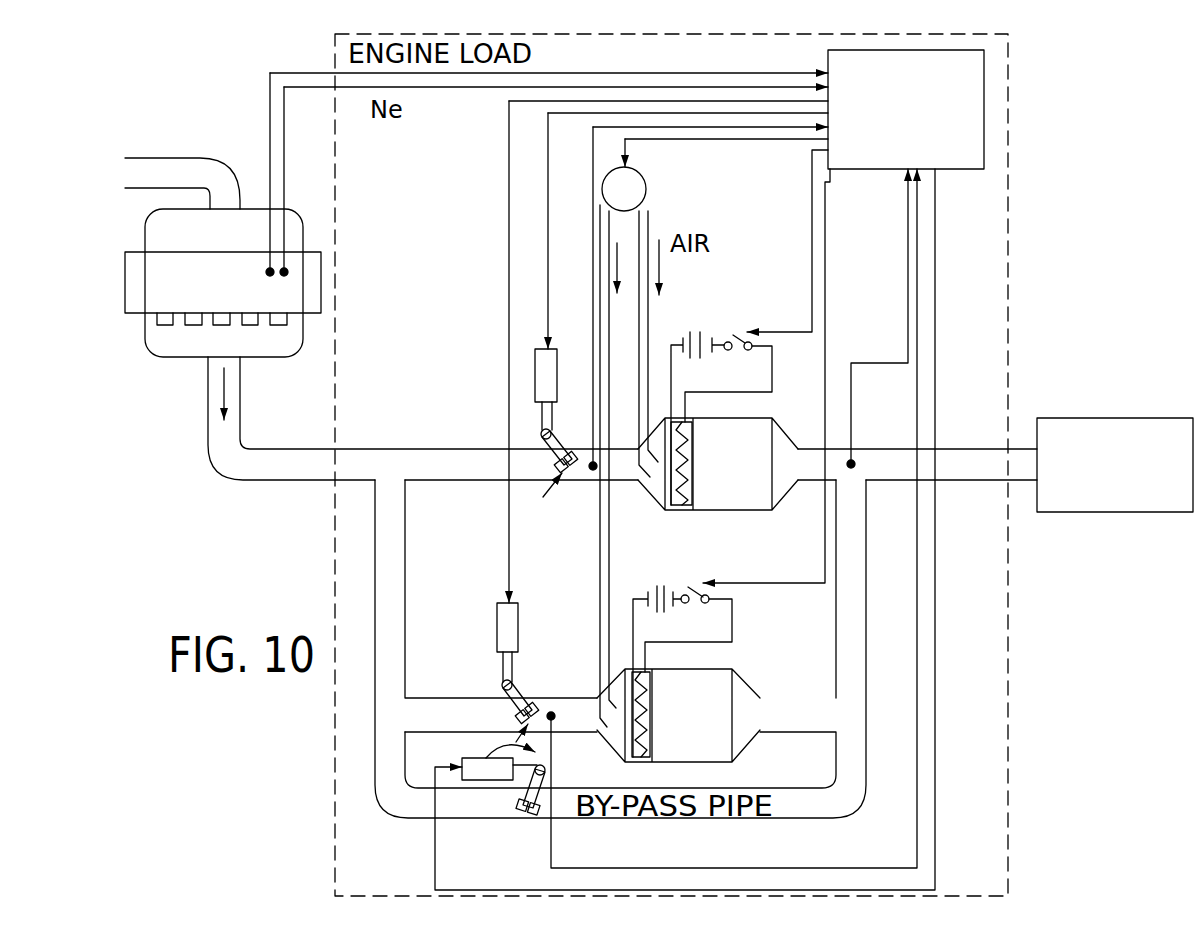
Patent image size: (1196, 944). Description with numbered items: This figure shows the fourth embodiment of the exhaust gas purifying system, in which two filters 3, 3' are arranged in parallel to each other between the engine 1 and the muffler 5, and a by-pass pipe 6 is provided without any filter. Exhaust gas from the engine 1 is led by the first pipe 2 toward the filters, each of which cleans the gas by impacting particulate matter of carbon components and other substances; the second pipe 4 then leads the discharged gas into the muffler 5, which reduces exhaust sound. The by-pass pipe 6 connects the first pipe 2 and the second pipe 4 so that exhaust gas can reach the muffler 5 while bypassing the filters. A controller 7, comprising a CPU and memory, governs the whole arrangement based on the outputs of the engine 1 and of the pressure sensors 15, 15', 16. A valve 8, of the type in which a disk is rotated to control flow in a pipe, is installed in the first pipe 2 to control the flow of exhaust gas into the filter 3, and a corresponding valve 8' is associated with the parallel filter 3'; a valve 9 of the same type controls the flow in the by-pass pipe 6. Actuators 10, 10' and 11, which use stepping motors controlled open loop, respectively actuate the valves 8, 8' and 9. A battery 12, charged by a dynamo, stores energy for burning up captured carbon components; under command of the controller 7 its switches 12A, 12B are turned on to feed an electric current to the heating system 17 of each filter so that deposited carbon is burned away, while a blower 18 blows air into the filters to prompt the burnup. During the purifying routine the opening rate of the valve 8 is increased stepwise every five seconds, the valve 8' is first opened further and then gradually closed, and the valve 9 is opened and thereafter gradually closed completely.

The engine 1 is at (288, 210).
The first pipe 2 is at (436, 449).
The filter 3 is at (719, 439).
The filter 3' is at (687, 697).
The second pipe 4 is at (972, 449).
The muffler 5 is at (1112, 418).
The by-pass pipe 6 is at (613, 820).
The controller 7 is at (949, 170).
The valve 8 is at (562, 424).
The valve 8' is at (526, 684).
The valve 9 is at (552, 772).
The actuator 10 is at (560, 276).
The actuator 10' is at (480, 395).
The actuator 11 is at (478, 757).
The battery 12 is at (702, 333).
The switch 12A is at (738, 330).
The switch 12B is at (732, 605).
The pressure sensor 15 is at (619, 340).
The pressure sensor 15' is at (732, 518).
The pressure sensor 16 is at (890, 462).
The heating system 17 is at (692, 498).
The blower 18 is at (644, 181).